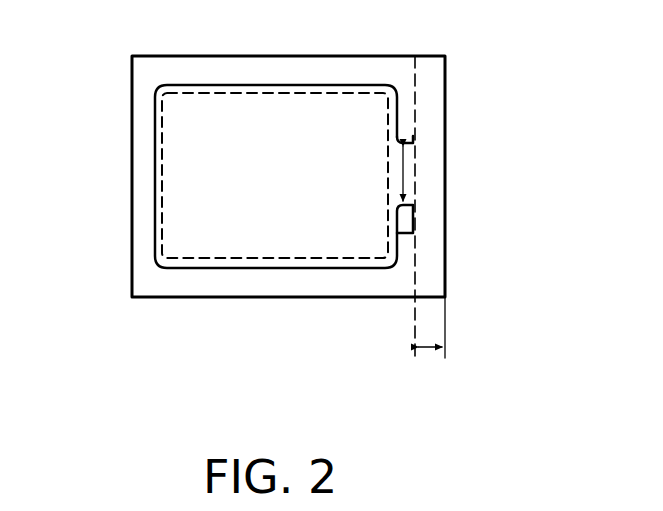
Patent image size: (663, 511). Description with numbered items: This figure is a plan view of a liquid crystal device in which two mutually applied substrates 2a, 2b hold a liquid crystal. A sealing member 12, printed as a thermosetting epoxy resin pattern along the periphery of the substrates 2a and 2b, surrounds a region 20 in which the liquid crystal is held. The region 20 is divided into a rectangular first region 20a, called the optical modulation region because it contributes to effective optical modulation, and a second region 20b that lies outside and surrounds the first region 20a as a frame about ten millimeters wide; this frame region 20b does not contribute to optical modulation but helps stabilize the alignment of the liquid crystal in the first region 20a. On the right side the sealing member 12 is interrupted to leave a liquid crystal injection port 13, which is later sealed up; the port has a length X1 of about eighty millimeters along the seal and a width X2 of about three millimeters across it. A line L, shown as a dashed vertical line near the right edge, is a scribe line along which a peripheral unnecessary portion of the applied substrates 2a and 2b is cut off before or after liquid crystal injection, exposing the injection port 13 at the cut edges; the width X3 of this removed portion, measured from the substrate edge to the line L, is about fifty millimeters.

The substrate 2a is at (282, 219).
The substrate 2b is at (200, 298).
The sealing member 12 is at (155, 128).
The liquid crystal injection port 13 is at (403, 183).
The region 20 is at (277, 260).
The first region 20a is at (352, 240).
The second region 20b is at (305, 262).
The line L is at (420, 92).
The length X1 is at (404, 163).
The width X2 is at (399, 237).
The width X3 is at (433, 350).